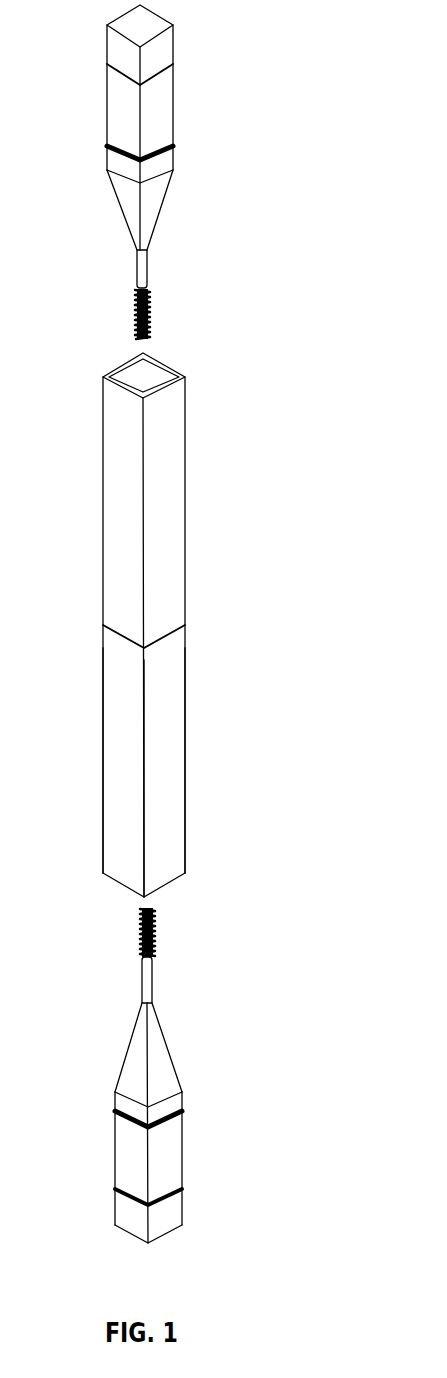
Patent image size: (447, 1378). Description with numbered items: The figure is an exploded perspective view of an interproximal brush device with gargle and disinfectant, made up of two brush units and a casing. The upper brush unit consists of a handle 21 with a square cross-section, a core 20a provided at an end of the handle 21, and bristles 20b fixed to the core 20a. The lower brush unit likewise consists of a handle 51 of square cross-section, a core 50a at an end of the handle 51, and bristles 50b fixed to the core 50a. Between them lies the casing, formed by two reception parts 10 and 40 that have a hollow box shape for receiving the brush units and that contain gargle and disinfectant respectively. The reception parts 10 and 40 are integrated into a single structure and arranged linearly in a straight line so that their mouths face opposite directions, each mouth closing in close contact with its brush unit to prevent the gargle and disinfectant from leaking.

The handle 21 is at (157, 113).
The core 20a is at (153, 292).
The bristles 20b is at (150, 320).
The reception part 10 is at (168, 512).
The reception part 40 is at (163, 760).
The bristles 50b is at (157, 922).
The core 50a is at (157, 957).
The handle 51 is at (165, 1147).